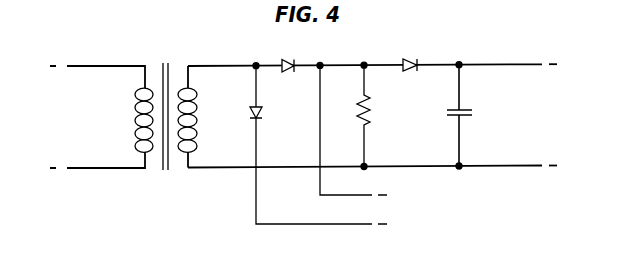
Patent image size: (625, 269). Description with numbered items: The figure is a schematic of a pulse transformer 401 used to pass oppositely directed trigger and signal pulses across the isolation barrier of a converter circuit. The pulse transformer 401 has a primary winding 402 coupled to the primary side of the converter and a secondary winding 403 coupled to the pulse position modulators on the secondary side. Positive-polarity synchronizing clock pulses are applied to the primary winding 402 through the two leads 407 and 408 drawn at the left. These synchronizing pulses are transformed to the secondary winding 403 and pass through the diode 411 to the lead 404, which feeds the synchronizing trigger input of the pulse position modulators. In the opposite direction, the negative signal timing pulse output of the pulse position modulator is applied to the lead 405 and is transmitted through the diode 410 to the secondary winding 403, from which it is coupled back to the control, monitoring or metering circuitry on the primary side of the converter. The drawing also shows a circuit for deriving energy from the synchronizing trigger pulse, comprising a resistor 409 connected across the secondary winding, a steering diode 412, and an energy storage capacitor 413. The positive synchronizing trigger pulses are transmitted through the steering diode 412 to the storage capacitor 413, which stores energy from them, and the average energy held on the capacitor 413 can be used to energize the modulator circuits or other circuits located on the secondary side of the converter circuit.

The pulse transformer 401 is at (164, 61).
The primary winding 402 is at (135, 121).
The secondary winding 403 is at (197, 121).
The lead 404 is at (353, 195).
The lead 405 is at (356, 224).
The lead 407 is at (77, 66).
The lead 408 is at (75, 168).
The resistor 409 is at (380, 115).
The diode 410 is at (269, 115).
The diode 411 is at (284, 54).
The steering diode 412 is at (406, 53).
The energy storage capacitor 413 is at (473, 115).